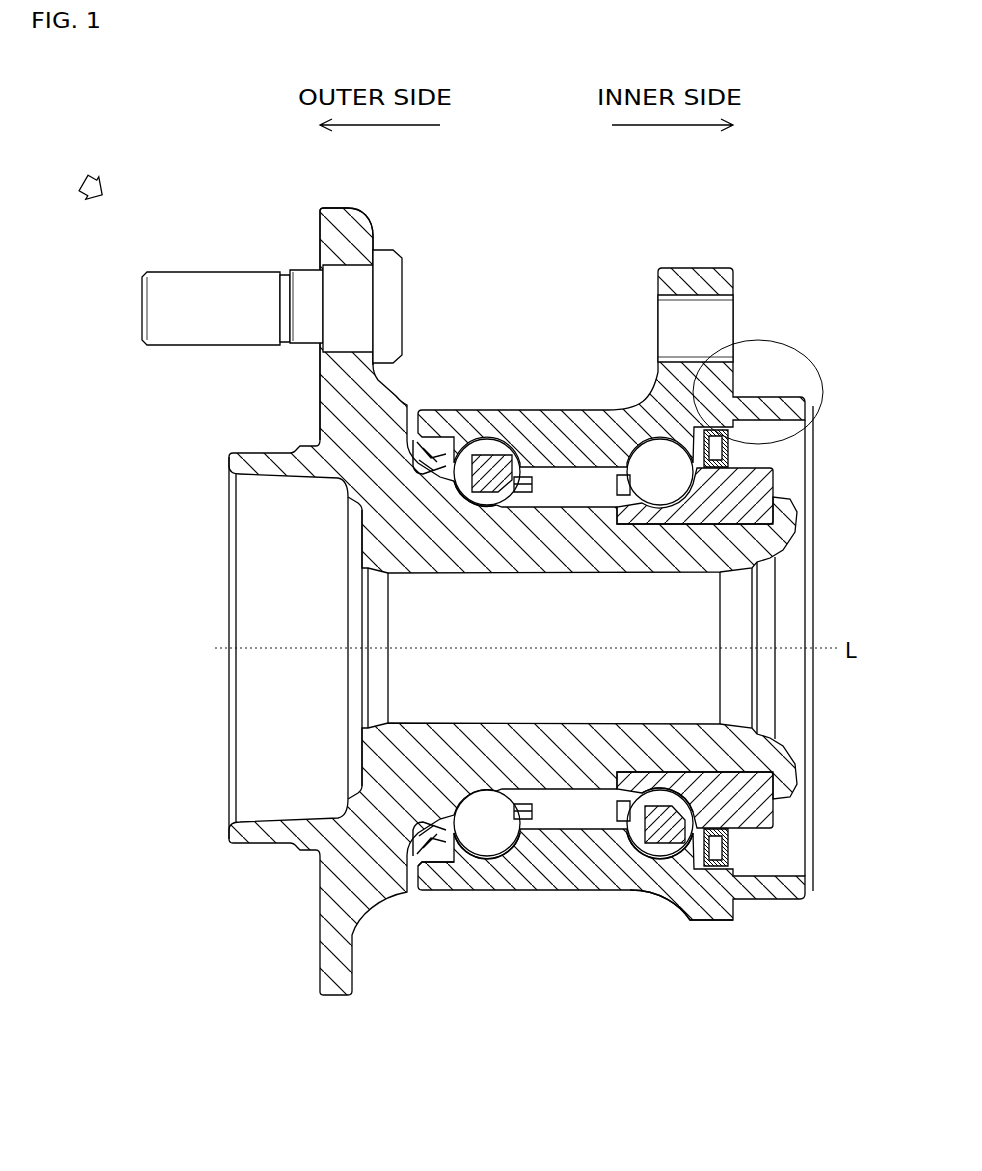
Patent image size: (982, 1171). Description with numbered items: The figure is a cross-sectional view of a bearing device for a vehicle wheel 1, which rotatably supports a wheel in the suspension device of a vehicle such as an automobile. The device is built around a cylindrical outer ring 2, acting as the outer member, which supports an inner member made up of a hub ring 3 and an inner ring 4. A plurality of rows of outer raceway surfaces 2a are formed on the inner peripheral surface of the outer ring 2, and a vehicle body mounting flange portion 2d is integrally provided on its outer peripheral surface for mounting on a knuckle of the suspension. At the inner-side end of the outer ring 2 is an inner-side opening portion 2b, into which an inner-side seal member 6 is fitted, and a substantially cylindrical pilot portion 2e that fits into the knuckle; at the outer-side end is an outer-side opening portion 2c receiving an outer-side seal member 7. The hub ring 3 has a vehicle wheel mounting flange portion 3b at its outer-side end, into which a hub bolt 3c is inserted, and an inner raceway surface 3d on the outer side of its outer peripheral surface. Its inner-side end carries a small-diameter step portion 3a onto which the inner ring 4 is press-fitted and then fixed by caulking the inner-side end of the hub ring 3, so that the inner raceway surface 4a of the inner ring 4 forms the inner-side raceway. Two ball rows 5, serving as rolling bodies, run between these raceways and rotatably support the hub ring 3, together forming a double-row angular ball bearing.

The bearing device for a vehicle wheel 1 is at (87, 182).
The outer ring 2 is at (592, 357).
The outer raceway surfaces 2a is at (658, 840).
The inner-side opening portion 2b is at (700, 902).
The outer-side opening portion 2c is at (445, 864).
The vehicle body mounting flange portion 2d is at (690, 268).
The pilot portion 2e is at (791, 390).
The hub ring 3 is at (778, 572).
The small-diameter step portion 3a is at (671, 535).
The vehicle wheel mounting flange portion 3b is at (348, 216).
The hub bolt 3c is at (212, 270).
The inner raceway surface 3d is at (480, 508).
The inner ring 4 is at (774, 812).
The inner raceway surface 4a is at (655, 795).
The ball rows 5 is at (642, 458).
The inner-side seal member 6 is at (748, 457).
The outer-side seal member 7 is at (452, 450).